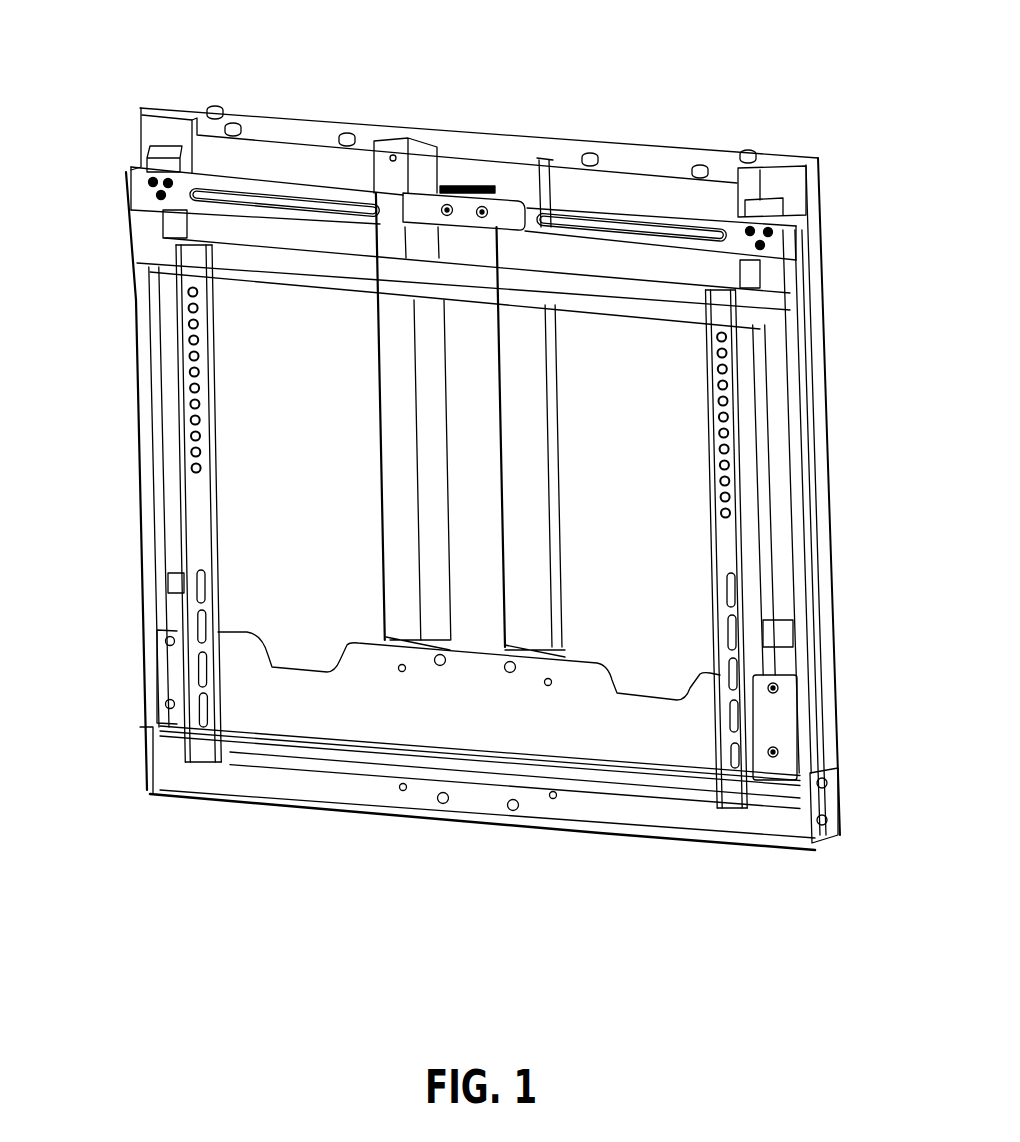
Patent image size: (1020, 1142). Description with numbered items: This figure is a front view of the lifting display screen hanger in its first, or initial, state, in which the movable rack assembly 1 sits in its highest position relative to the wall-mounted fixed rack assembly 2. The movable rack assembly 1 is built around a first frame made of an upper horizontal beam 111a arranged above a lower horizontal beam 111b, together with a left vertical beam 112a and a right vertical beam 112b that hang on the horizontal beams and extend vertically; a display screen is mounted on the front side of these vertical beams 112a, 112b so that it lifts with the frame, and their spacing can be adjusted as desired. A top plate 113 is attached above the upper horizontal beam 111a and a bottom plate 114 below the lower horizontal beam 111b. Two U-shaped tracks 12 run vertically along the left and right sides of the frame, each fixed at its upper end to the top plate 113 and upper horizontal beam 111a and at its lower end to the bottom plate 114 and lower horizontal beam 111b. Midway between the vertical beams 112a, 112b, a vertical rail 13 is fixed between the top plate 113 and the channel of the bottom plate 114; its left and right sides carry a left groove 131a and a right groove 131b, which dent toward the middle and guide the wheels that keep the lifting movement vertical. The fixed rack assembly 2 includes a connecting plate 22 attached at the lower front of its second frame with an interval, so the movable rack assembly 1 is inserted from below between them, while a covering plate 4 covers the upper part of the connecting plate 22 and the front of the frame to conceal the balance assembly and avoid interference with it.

The movable rack assembly 1 is at (770, 662).
The fixed rack assembly 2 is at (652, 162).
The covering plate 4 is at (230, 455).
The track 12 is at (148, 383).
The rail 13 is at (478, 625).
The connecting plate 22 is at (387, 712).
The upper horizontal beam 111a is at (250, 255).
The lower horizontal beam 111b is at (305, 750).
The left vertical beam 112a is at (192, 511).
The right vertical beam 112b is at (808, 532).
The top plate 113 is at (432, 208).
The bottom plate 114 is at (434, 810).
The left groove 131a is at (447, 478).
The right groove 131b is at (505, 508).